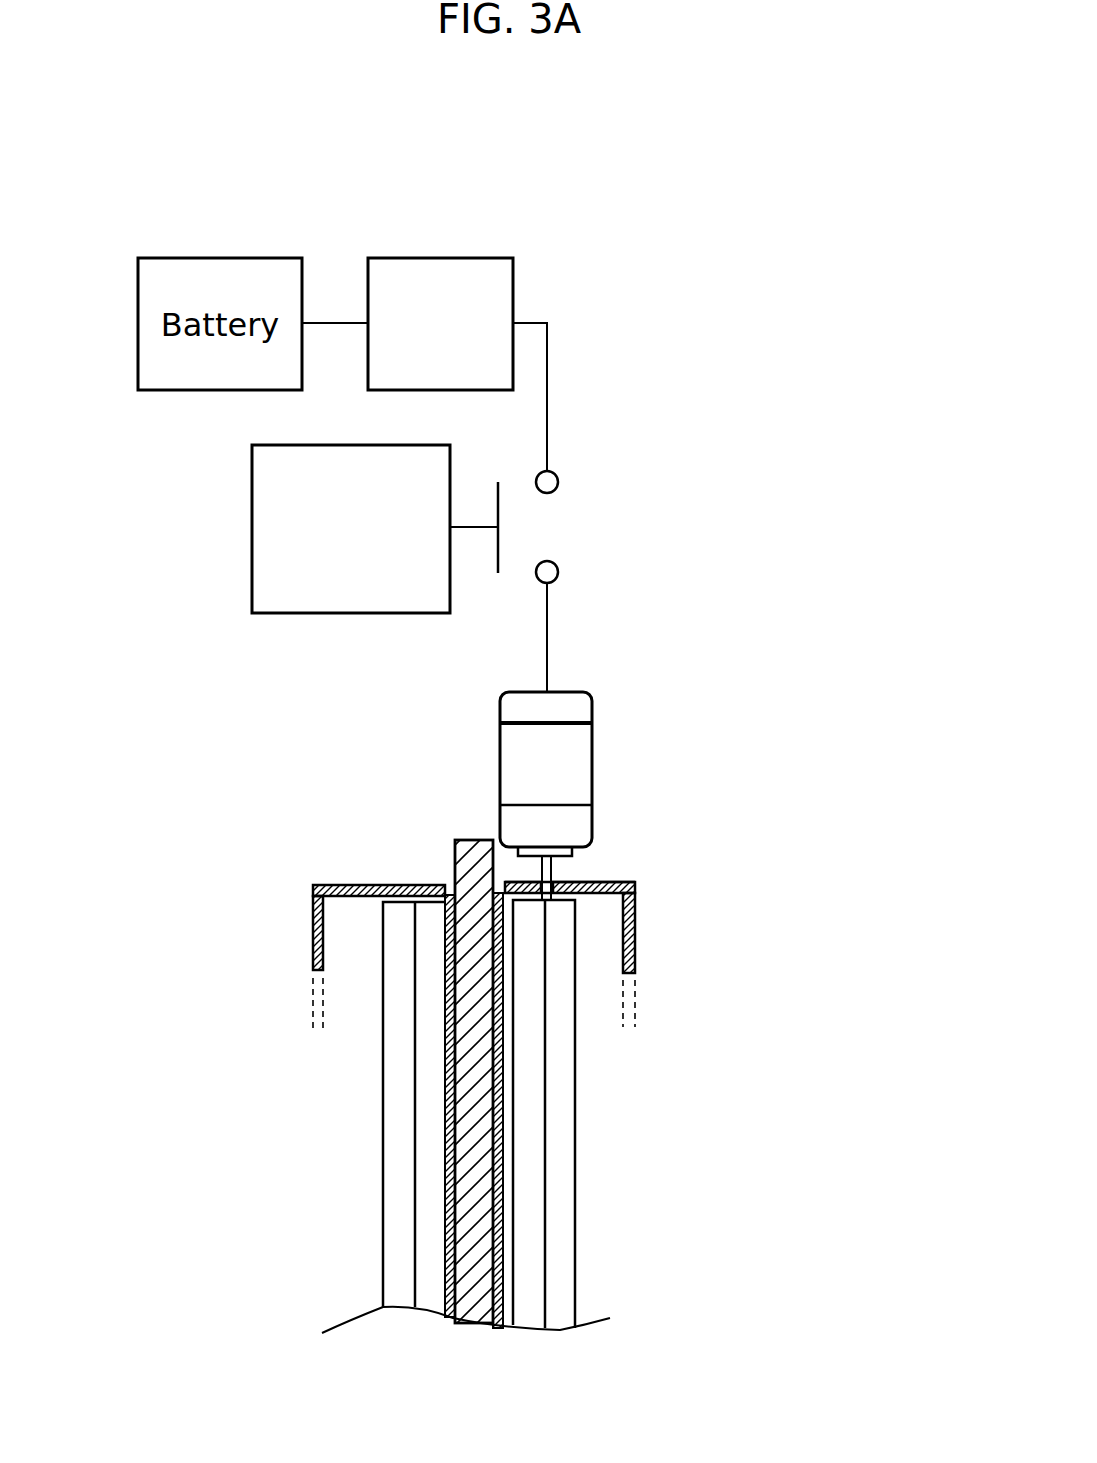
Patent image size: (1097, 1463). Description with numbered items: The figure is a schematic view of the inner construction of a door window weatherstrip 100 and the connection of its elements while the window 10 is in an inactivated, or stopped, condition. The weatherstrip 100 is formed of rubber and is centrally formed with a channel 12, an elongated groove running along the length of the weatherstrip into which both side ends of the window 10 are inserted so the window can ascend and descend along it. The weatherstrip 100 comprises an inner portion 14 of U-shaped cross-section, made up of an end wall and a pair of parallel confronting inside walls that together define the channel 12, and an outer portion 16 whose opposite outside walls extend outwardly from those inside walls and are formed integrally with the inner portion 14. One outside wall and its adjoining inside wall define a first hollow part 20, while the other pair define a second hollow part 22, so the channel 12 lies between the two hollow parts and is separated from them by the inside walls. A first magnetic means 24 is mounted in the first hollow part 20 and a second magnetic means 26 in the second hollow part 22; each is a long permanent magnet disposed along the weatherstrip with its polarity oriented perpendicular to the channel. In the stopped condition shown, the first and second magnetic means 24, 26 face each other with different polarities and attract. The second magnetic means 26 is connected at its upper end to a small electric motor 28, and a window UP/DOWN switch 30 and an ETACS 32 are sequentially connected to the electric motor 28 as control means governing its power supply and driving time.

The window glass 10 is at (470, 845).
The channel 12 is at (452, 878).
The inner portion 14 is at (450, 960).
The outer portion 16 is at (637, 942).
The first hollow part 20 is at (350, 917).
The second hollow part 22 is at (608, 915).
The first magnetic means 24 is at (382, 1129).
The second magnetic means 26 is at (577, 1124).
The electric motor 28 is at (586, 752).
The window UP/DOWN switch 30 is at (252, 527).
The electronic time and alarm control system (ETACS) 32 is at (465, 258).
The door window weatherstrip 100 is at (601, 884).